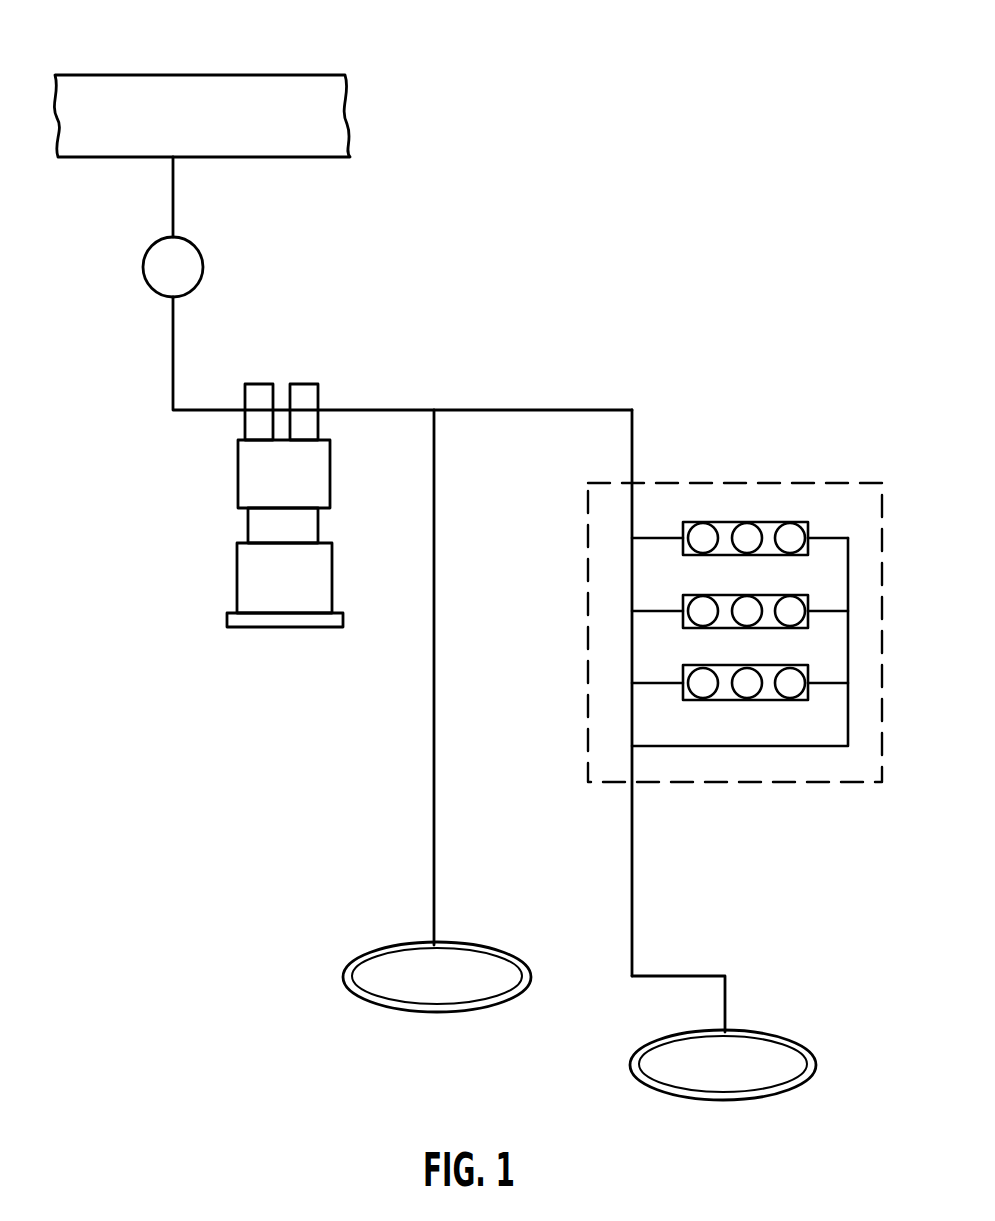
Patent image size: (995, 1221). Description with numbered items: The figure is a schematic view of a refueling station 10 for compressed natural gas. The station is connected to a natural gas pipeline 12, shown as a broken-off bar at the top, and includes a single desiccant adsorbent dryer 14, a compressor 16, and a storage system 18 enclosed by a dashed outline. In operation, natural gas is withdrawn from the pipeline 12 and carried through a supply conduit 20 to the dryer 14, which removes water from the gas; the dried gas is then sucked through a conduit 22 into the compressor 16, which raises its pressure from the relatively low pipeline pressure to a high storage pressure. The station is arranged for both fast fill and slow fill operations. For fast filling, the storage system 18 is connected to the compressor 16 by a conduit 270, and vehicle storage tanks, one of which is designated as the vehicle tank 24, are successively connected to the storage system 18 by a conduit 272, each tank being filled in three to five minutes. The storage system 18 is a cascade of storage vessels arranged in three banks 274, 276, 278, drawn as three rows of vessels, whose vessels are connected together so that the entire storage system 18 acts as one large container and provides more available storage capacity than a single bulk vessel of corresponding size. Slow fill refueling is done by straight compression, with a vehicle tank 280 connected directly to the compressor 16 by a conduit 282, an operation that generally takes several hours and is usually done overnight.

The refueling station 10 is at (548, 328).
The natural gas pipeline 12 is at (281, 75).
The desiccant adsorbent dryer 14 is at (203, 268).
The compressor 16 is at (331, 477).
The storage system 18 is at (718, 483).
The supply conduit 20 is at (174, 212).
The conduit 22 is at (191, 412).
The natural gas vehicle tank 24 is at (783, 1034).
The conduit 270 is at (596, 410).
The conduit 272 is at (632, 930).
The first storage bank 274 is at (779, 522).
The second storage bank 276 is at (765, 595).
The third storage bank 278 is at (770, 665).
The vehicle tank 280 is at (465, 942).
The conduit 282 is at (436, 742).